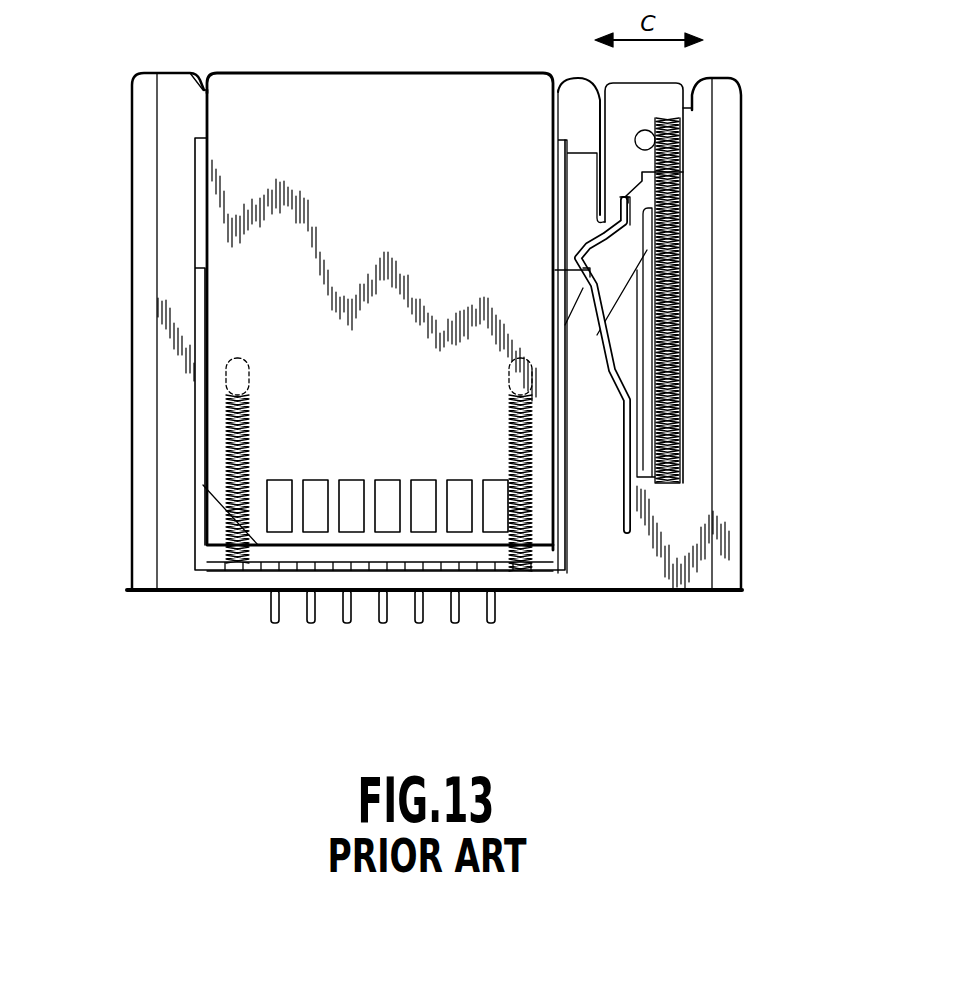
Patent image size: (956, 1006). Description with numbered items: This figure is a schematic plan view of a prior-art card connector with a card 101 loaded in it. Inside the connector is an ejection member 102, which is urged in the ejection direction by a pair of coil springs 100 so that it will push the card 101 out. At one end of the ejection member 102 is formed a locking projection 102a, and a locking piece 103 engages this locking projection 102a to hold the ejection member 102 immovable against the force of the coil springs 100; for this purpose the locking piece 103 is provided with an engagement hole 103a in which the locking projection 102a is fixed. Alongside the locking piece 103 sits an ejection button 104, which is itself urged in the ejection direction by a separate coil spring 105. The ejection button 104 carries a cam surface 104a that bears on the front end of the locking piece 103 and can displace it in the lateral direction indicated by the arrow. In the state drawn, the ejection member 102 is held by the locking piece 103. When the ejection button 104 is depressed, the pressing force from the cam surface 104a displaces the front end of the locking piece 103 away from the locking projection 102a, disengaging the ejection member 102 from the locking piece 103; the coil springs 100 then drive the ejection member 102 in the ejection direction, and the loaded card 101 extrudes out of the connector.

The coil springs 100 is at (232, 440).
The card 101 is at (233, 223).
The ejection member 102 is at (215, 515).
The locking projection 102a is at (588, 286).
The locking piece 103 is at (568, 362).
The engagement hole 103a is at (590, 286).
The ejection button 104 is at (660, 100).
The cam surface 104a is at (643, 177).
The coil spring 105 is at (683, 441).